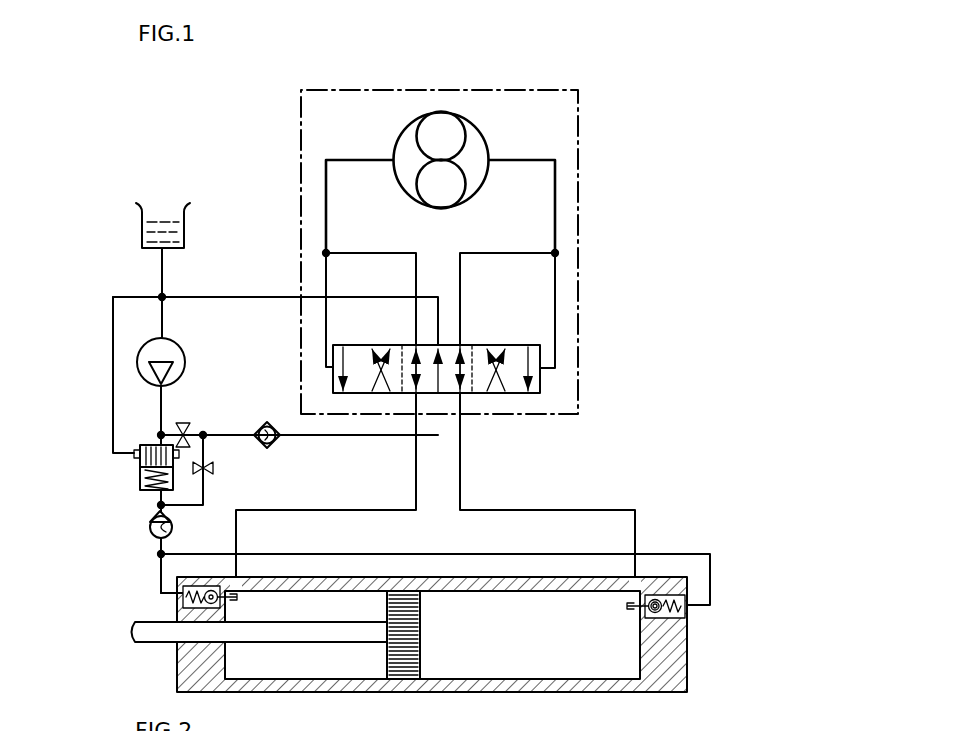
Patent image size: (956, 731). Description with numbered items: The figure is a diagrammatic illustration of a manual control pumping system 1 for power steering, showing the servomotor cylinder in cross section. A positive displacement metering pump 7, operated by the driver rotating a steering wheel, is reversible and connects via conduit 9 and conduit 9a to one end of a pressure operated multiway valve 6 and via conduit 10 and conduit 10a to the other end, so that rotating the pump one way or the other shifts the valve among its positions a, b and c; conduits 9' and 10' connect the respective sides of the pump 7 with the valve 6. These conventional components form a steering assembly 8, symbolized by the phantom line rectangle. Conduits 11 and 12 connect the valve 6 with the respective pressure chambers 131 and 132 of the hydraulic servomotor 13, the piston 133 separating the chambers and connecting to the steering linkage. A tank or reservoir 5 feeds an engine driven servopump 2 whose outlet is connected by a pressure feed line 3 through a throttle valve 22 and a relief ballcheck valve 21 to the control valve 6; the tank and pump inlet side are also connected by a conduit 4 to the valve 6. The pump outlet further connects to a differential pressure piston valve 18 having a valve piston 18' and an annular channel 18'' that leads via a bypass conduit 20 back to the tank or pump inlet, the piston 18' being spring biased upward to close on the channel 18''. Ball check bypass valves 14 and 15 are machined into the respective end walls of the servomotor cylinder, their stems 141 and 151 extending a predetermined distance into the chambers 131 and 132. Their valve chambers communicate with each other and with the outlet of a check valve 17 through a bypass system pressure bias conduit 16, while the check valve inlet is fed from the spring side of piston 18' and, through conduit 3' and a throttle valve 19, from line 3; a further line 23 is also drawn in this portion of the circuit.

The manual control pumping system 1 is at (695, 278).
The servopump 2 is at (158, 352).
The pressure feed line 3 is at (299, 401).
The conduit 3' is at (197, 470).
The conduit 4 is at (218, 296).
The tank or reservoir 5 is at (170, 226).
The pressure operated multiway valve 6 is at (517, 377).
The positive displacement metering pump 7 is at (474, 150).
The steering assembly 8 is at (579, 197).
The conduit 9 is at (314, 200).
The conduit 9' is at (371, 282).
The conduit 9a is at (324, 262).
The conduit 10 is at (586, 206).
The conduit 10' is at (507, 282).
The conduit 10a is at (556, 308).
The conduit 11 is at (417, 468).
The conduit 12 is at (567, 509).
The hydraulic servomotor 13 is at (691, 510).
The ball check bypass valve 14 is at (158, 609).
The ball check bypass valve 15 is at (694, 618).
The bypass system pressure bias conduit 16 is at (590, 553).
The check valve 17 is at (149, 525).
The differential pressure piston valve 18 is at (109, 483).
The valve piston 18' is at (104, 478).
The annular channel 18'' is at (103, 451).
The throttle valve 19 is at (214, 468).
The bypass conduit 20 is at (112, 444).
The relief ballcheck valve 21 is at (266, 424).
The throttle valve 22 is at (181, 428).
The connecting line 23 is at (158, 574).
The pressure chamber 131 is at (322, 658).
The pressure chamber 132 is at (530, 666).
The piston 133 is at (410, 653).
The stem 141 is at (190, 623).
The stem 151 is at (655, 612).